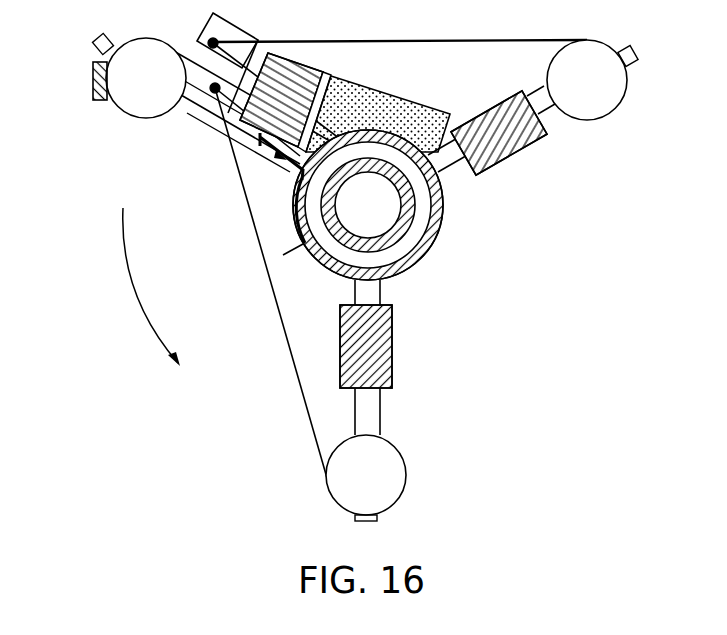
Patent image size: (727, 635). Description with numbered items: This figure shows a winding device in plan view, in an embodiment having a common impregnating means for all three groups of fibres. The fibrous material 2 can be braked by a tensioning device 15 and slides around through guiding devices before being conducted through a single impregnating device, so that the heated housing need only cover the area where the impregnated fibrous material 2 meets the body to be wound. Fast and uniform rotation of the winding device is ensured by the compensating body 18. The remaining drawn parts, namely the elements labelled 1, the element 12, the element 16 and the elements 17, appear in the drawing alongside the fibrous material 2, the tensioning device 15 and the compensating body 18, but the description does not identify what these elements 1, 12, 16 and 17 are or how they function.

The roller 1 is at (143, 110).
The fibrous material 2 is at (312, 74).
The tape strip 12 is at (292, 197).
The tensioning device 15 is at (410, 100).
The stop 16 is at (92, 76).
The anchor pin 17 is at (208, 40).
The compensating body 18 is at (392, 340).